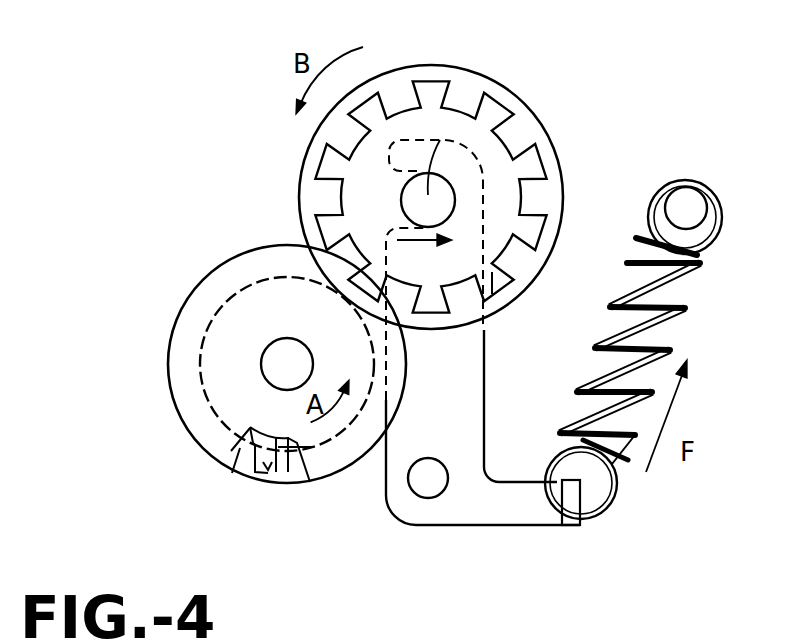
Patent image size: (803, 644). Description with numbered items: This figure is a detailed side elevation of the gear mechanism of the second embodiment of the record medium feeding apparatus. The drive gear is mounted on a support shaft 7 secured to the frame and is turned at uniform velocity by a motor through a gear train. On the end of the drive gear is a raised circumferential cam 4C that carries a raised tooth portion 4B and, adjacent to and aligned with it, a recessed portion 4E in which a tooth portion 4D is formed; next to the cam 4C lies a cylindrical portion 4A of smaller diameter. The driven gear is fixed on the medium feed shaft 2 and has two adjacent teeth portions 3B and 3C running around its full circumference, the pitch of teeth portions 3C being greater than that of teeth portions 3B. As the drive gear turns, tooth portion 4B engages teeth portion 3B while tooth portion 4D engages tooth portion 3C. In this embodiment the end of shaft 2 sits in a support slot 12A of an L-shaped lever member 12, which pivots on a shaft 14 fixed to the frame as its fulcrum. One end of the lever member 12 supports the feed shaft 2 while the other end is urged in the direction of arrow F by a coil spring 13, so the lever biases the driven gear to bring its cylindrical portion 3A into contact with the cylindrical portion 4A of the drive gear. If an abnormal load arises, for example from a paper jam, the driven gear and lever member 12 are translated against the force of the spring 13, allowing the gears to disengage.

The medium feed shaft 2 is at (440, 140).
The cylindrical portion of driven gear 3A is at (493, 80).
The teeth portion of driven gear 3B is at (545, 245).
The teeth portion of driven gear 3C is at (490, 277).
The cylindrical portion of drive gear 4A is at (208, 322).
The raised tooth portion 4B is at (277, 485).
The cam 4C is at (218, 268).
The tooth portion 4D is at (233, 473).
The recessed portion 4E is at (297, 482).
The support shaft 7 is at (287, 367).
The L-shaped lever member 12 is at (453, 385).
The support slot 12A is at (450, 188).
The coil spring 13 is at (663, 277).
The shaft 14 is at (433, 478).